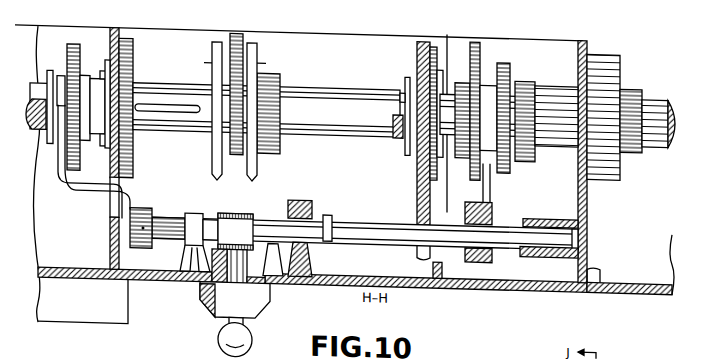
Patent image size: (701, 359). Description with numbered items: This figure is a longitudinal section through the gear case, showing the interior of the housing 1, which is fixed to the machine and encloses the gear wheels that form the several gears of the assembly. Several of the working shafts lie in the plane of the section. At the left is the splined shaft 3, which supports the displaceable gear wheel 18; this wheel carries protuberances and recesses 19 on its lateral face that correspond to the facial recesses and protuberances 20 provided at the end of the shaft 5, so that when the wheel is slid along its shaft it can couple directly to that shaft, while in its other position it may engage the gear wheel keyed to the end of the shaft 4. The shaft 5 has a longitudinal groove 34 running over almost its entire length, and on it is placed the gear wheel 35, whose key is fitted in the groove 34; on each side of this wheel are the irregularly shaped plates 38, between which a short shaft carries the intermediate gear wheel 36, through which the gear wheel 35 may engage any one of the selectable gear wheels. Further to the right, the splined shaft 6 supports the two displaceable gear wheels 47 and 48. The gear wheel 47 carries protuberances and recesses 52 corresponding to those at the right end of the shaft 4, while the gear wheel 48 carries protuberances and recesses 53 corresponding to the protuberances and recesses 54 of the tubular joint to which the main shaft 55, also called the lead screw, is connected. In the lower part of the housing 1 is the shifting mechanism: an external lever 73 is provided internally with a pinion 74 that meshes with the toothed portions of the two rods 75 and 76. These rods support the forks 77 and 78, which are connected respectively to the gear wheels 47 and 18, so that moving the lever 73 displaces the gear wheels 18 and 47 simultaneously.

The housing 1 is at (148, 273).
The shaft 3 is at (47, 77).
The shaft 4 is at (400, 85).
The shaft 5 is at (268, 109).
The shaft 6 is at (451, 87).
The displaceable gear wheel 18 is at (80, 49).
The protuberances and recesses 19 is at (82, 72).
The facial recesses and protuberances 20 is at (100, 135).
The longitudinal groove 34 is at (168, 102).
The gear wheel 35 is at (238, 149).
The intermediate gear wheel 36 is at (243, 28).
The plates 38 is at (212, 157).
The displaceable gear wheel 47 is at (481, 38).
The displaceable gear wheel 48 is at (505, 54).
The protuberances and recesses 52 is at (463, 145).
The protuberances and recesses 53 is at (527, 140).
The protuberances and recesses 54 is at (542, 80).
The main shaft 55 is at (652, 128).
The external lever 73 is at (252, 332).
The pinion 74 is at (252, 248).
The rod 75 is at (376, 217).
The rod 76 is at (168, 213).
The fork 77 is at (490, 191).
The fork 78 is at (74, 186).